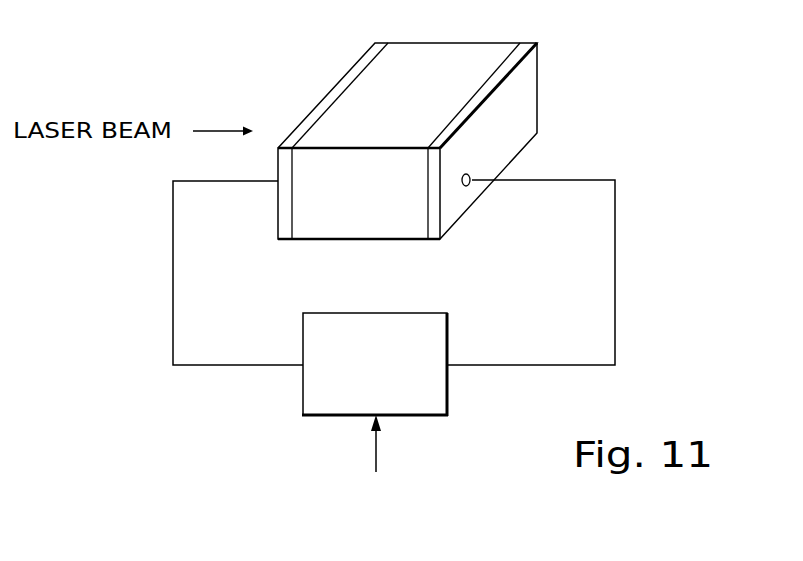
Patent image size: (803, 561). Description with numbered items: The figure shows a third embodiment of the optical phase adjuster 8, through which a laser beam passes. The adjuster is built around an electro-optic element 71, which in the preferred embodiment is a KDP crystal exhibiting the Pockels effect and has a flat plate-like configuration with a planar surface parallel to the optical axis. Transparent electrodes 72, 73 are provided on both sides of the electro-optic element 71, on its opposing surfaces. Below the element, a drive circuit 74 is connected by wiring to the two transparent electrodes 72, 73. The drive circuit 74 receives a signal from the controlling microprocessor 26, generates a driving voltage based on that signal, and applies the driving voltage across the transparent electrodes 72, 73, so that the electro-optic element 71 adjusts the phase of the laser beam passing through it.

The optical phase adjuster 8 is at (677, 33).
The electro-optic element 71 is at (360, 103).
The transparent electrode 72 is at (285, 224).
The transparent electrode 73 is at (538, 85).
The drive circuit 74 is at (446, 313).
The controlling microprocessor 26 is at (386, 483).